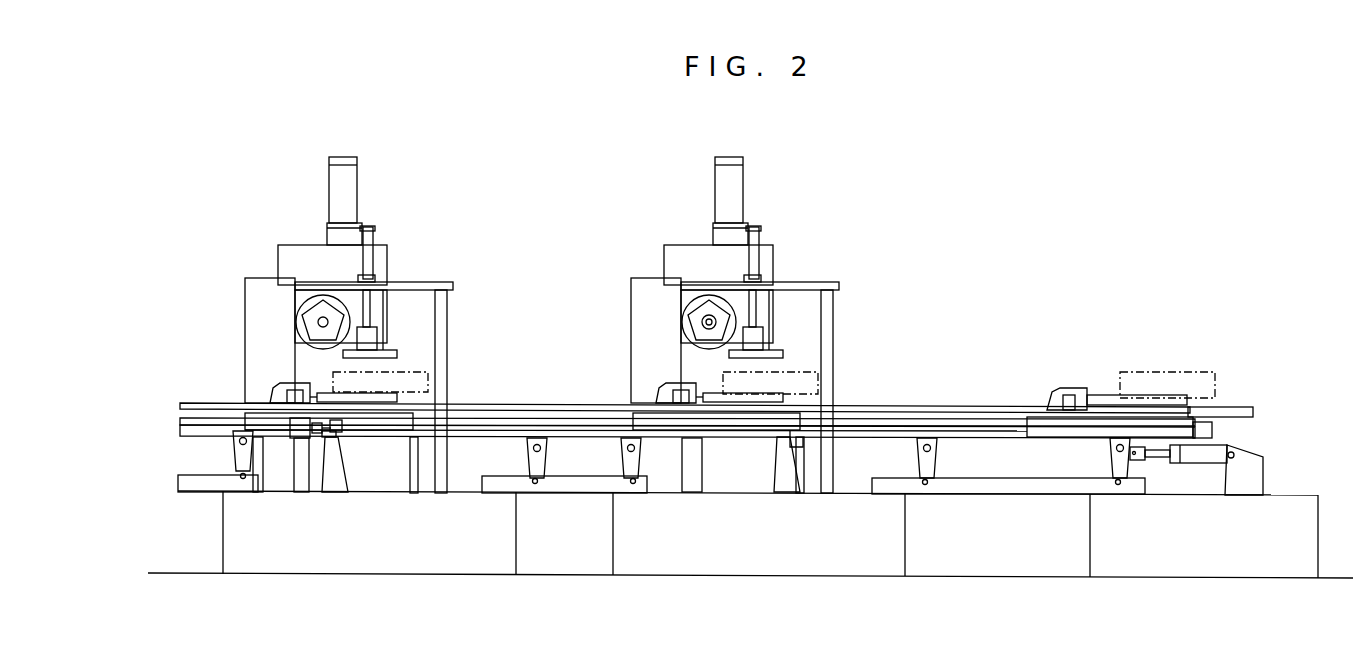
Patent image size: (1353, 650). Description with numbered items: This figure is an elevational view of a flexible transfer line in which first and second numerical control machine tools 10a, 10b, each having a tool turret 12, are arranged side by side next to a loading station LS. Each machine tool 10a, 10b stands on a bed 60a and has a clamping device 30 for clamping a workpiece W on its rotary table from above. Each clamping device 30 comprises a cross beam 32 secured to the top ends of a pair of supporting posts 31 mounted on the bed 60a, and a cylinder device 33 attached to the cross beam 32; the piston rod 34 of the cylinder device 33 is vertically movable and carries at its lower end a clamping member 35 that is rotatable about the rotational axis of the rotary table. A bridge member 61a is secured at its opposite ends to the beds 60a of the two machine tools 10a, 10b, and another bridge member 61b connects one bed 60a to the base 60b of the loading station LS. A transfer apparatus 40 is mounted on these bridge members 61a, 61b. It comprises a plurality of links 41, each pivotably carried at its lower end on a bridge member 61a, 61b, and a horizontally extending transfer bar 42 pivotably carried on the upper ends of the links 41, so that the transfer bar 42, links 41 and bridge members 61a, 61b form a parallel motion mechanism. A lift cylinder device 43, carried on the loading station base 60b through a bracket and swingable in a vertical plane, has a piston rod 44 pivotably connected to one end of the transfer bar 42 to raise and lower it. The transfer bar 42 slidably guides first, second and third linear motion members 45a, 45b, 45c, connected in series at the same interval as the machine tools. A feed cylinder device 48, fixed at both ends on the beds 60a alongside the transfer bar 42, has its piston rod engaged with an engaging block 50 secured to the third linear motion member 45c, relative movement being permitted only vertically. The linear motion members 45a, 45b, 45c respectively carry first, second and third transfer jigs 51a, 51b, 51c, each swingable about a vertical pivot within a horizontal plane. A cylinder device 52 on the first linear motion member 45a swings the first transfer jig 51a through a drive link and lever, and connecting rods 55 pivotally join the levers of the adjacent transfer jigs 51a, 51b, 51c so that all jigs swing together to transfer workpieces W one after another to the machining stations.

The first numerical control machine tool 10a is at (703, 221).
The second numerical control machine tool 10b is at (300, 244).
The tool turret 12 is at (300, 310).
The clamping device 30 is at (540, 356).
The supporting posts 31 is at (245, 336).
The cross beam 32 is at (423, 282).
The cylinder device 33 is at (369, 242).
The piston rod 34 is at (372, 303).
The clamping member 35 is at (389, 355).
The transfer apparatus 40 is at (1068, 386).
The links 41 is at (237, 456).
The transfer bar 42 is at (937, 432).
The lift cylinder device 43 is at (1235, 445).
The piston rod 44 is at (1163, 460).
The first linear motion member 45a is at (1073, 430).
The second linear motion member 45b is at (752, 432).
The third linear motion member 45c is at (280, 430).
The feed cylinder device 48 is at (503, 444).
The engaging block 50 is at (305, 440).
The first transfer jig 51a is at (1110, 395).
The second transfer jig 51b is at (719, 372).
The third transfer jig 51c is at (328, 393).
The cylinder device 52 is at (1250, 403).
The connecting rod 55 is at (206, 403).
The bed 60a is at (345, 575).
The base 60b is at (1181, 578).
The bridge member 61a is at (205, 494).
The bridge member 61b is at (997, 497).
The workpiece W is at (1173, 382).
The loading station LS is at (1206, 365).